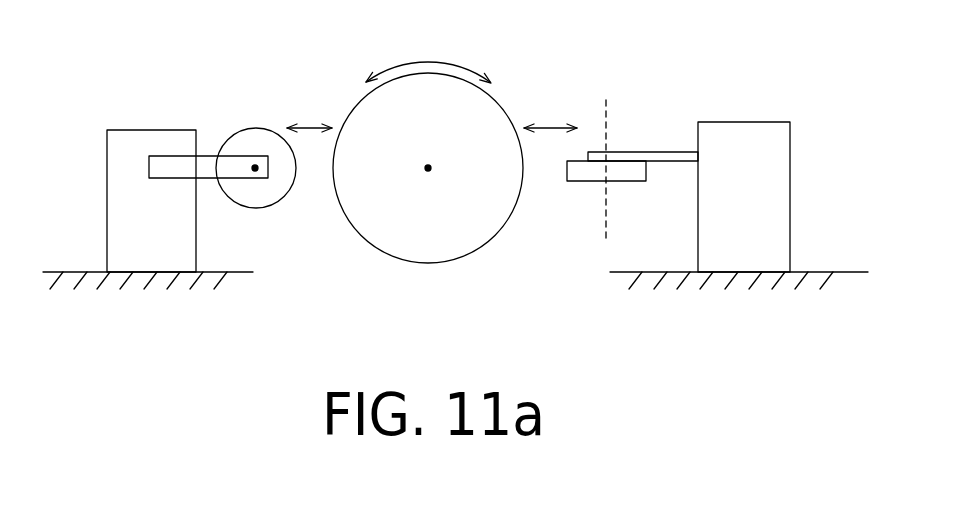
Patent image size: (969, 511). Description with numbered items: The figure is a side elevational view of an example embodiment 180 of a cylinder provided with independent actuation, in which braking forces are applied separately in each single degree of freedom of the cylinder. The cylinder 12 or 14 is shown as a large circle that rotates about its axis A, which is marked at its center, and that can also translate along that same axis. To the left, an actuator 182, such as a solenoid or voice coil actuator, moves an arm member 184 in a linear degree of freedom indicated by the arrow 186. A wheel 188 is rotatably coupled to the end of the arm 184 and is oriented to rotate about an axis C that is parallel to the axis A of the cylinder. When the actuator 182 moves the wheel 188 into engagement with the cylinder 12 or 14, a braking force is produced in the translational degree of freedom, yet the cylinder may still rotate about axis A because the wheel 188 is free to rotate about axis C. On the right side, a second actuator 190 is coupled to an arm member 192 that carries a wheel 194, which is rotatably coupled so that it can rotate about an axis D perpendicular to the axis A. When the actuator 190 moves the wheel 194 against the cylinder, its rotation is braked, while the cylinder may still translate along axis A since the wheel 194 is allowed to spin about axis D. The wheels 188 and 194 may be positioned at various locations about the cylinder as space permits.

The embodiment of a cylinder provided with independent actuation 180 is at (455, 168).
The actuator 182 is at (148, 137).
The arm member 184 is at (205, 176).
The arrow 186 is at (308, 123).
The wheel 188 is at (253, 138).
The actuator 190 is at (780, 158).
The arm member 192 is at (676, 153).
The wheel 194 is at (583, 181).
The cylinder 12 is at (470, 150).
The cylinder 14 is at (485, 118).
The axis A is at (430, 170).
The axis C is at (256, 169).
The axis D is at (608, 114).